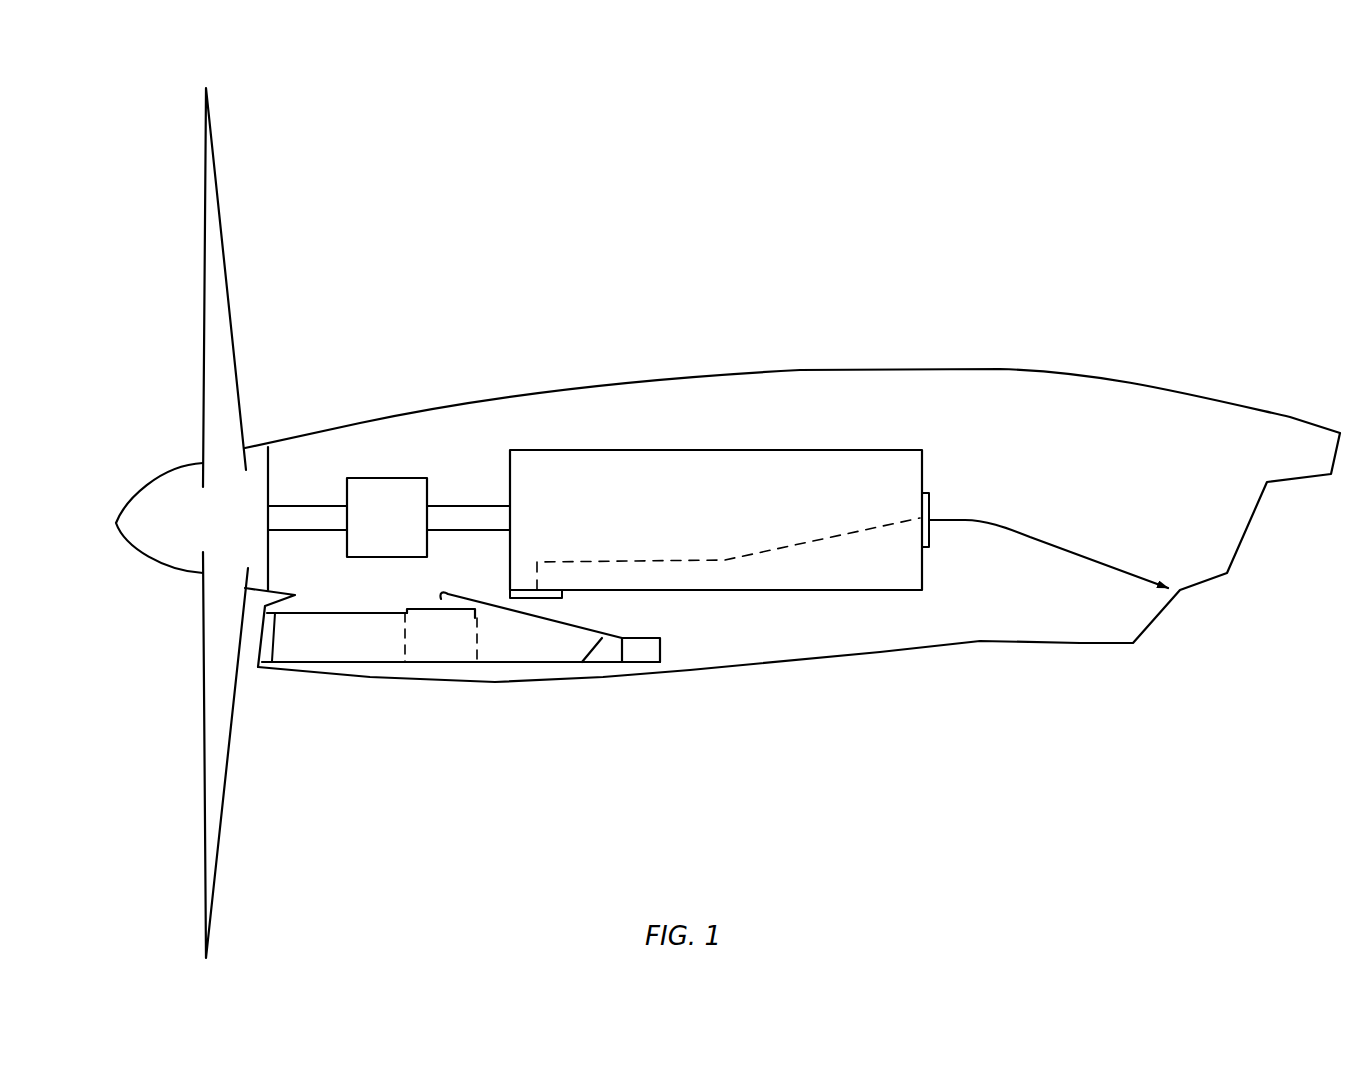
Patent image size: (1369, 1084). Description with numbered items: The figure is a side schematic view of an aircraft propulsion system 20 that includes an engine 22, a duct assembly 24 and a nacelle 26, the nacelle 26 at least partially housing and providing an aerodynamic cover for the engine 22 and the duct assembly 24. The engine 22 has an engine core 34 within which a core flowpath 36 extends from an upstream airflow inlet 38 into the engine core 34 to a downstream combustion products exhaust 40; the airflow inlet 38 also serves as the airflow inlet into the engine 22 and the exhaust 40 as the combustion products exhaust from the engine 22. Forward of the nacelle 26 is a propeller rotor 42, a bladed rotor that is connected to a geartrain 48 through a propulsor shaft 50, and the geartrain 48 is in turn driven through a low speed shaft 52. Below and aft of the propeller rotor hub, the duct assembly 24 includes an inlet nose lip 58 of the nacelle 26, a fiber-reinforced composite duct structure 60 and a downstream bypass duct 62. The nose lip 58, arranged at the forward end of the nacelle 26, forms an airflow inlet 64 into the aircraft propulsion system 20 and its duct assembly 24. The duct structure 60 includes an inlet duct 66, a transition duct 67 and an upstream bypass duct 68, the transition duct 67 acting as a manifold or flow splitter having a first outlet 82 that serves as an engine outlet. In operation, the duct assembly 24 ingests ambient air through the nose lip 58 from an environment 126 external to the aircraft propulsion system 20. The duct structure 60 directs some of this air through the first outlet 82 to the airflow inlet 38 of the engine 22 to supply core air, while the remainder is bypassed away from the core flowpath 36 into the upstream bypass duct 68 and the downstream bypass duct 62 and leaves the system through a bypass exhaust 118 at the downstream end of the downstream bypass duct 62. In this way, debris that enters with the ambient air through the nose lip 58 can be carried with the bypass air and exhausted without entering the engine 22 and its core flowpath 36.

The aircraft propulsion system 20 is at (792, 451).
The engine 22 is at (614, 403).
The duct assembly 24 is at (421, 672).
The nacelle 26 is at (471, 396).
The engine core 34 is at (790, 445).
The core flowpath 36 is at (760, 550).
The airflow inlet 38 is at (536, 600).
The exhaust 40 is at (930, 507).
The propeller rotor 42 is at (219, 117).
The geartrain 48 is at (388, 478).
The propulsor shaft 50 is at (305, 505).
The low speed shaft 52 is at (462, 505).
The inlet nose lip 58 is at (252, 652).
The fiber-reinforced composite duct structure 60 is at (308, 667).
The downstream bypass duct 62 is at (613, 668).
The airflow inlet 64 is at (260, 633).
The inlet duct 66 is at (368, 665).
The transition duct 67 is at (452, 665).
The upstream bypass duct 68 is at (532, 665).
The first outlet 82 is at (422, 607).
The bypass exhaust 118 is at (645, 665).
The environment 126 is at (62, 641).